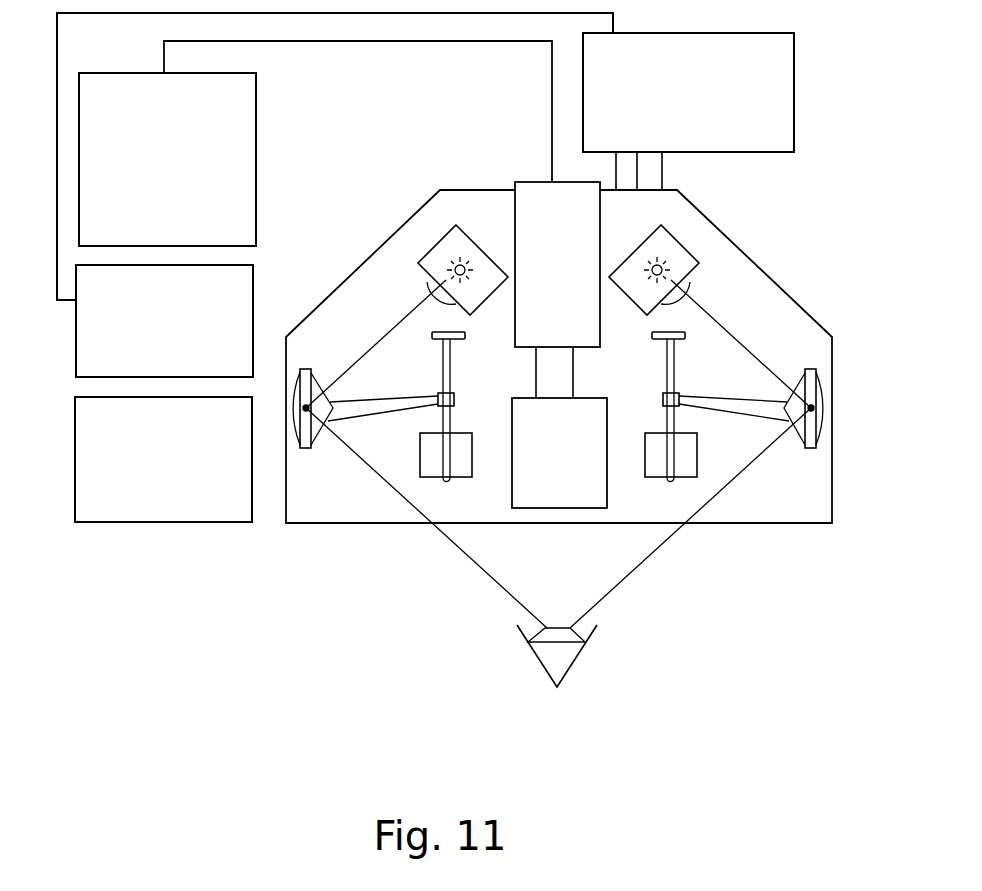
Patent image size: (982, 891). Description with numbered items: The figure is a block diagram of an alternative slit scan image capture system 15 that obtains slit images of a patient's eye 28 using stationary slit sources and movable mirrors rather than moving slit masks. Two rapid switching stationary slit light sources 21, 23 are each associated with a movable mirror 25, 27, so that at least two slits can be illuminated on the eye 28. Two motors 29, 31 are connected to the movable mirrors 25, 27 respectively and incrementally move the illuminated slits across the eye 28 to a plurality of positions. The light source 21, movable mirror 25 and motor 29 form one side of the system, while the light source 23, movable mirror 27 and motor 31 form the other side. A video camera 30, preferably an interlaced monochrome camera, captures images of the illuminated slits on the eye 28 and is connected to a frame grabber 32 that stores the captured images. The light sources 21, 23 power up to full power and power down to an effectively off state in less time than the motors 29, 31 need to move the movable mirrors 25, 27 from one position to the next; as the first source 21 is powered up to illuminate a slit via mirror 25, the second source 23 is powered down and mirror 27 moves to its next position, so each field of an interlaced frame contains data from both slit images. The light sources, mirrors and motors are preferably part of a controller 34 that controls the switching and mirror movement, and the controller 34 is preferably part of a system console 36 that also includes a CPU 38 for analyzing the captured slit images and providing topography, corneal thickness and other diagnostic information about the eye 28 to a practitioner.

The slit scan image capture system 15 is at (481, 190).
The rapid switching stationary slit light source 21 is at (437, 243).
The rapid switching stationary slit light source 23 is at (680, 243).
The movable mirror 25 is at (311, 450).
The movable mirror 27 is at (808, 450).
The eye 28 is at (577, 666).
The motor 29 is at (432, 478).
The video camera 30 is at (559, 345).
The motor 31 is at (685, 478).
The frame grabber 32 is at (167, 159).
The controller 34 is at (688, 111).
The system console 36 is at (164, 321).
The CPU 38 is at (163, 459).